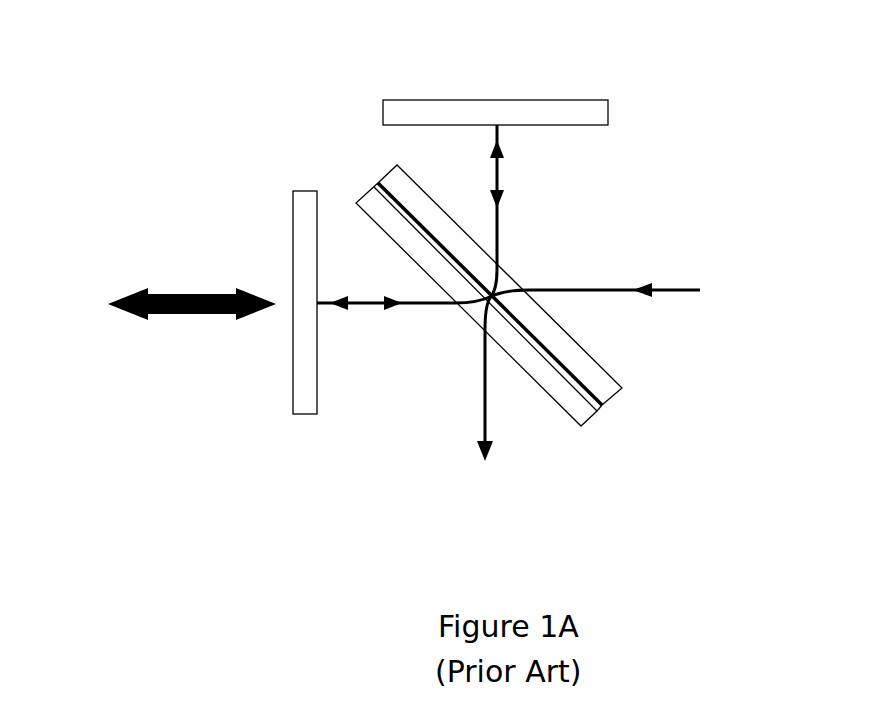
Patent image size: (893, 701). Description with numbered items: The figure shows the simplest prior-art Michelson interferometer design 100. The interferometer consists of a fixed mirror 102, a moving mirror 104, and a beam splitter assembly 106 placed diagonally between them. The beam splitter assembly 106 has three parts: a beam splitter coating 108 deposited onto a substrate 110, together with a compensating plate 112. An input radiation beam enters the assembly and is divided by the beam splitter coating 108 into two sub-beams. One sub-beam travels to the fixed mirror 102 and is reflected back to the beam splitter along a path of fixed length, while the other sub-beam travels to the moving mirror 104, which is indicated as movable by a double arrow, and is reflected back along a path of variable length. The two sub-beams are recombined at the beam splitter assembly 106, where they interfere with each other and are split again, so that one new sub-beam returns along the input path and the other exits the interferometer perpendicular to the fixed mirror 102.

The Michelson interferometer design 100 is at (167, 150).
The fixed mirror 102 is at (448, 98).
The moving mirror 104 is at (308, 416).
The beam splitter assembly 106 is at (523, 324).
The beam splitter coating 108 is at (603, 407).
The substrate 110 is at (615, 392).
The compensating plate 112 is at (583, 421).